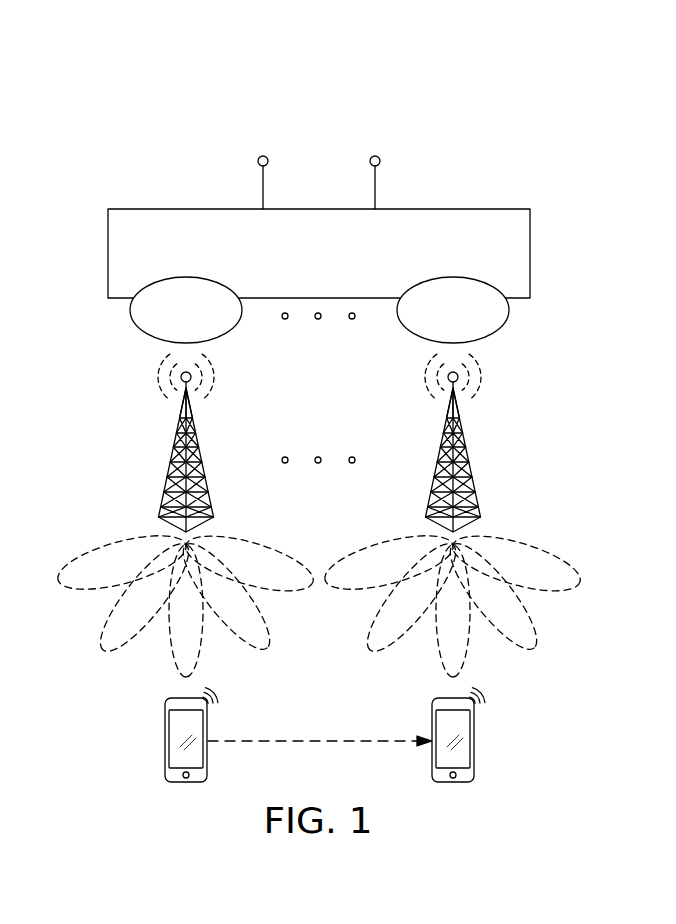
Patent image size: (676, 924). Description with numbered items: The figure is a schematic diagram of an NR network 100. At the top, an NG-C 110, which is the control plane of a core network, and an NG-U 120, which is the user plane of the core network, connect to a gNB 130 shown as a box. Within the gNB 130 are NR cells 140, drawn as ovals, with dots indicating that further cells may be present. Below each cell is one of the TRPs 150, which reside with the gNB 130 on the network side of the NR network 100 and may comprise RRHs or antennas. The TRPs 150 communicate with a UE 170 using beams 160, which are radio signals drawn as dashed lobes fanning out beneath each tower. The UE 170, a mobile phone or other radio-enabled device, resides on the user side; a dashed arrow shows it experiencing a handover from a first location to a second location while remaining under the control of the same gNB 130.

The NR network 100 is at (205, 92).
The NG-C 110 is at (257, 162).
The NG-U 120 is at (380, 161).
The gNB 130 is at (108, 256).
The NR cells 140 is at (166, 278).
The TRPs 150 is at (496, 446).
The beams 160 is at (556, 530).
The UE 170 is at (473, 752).